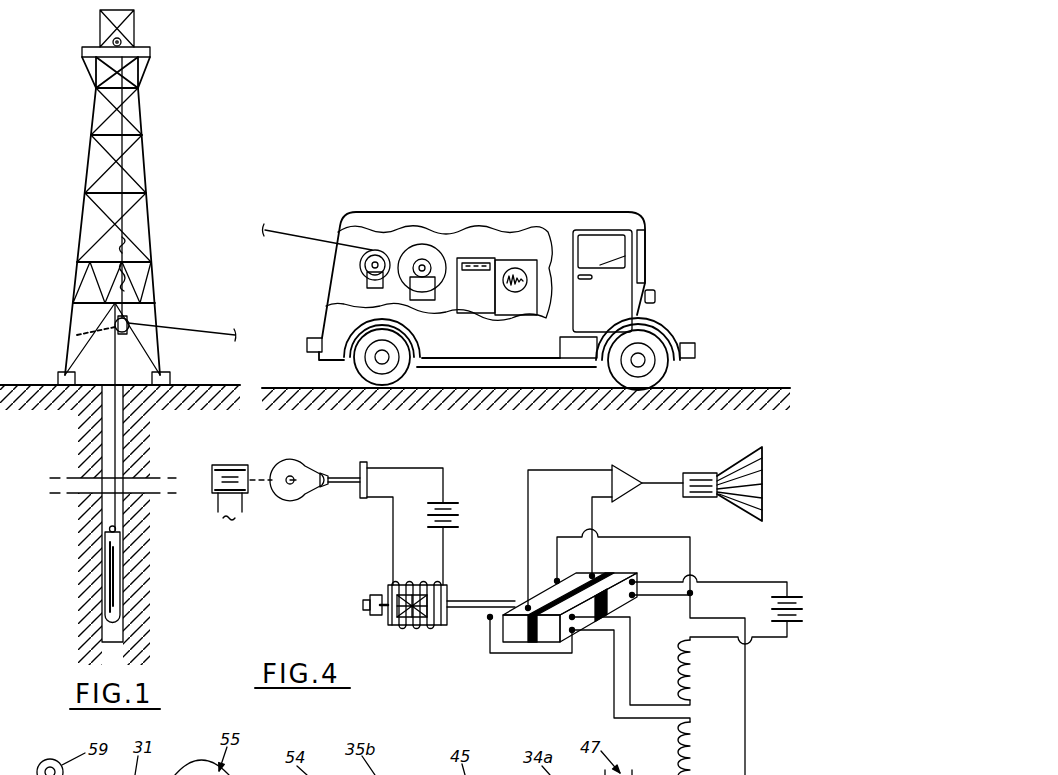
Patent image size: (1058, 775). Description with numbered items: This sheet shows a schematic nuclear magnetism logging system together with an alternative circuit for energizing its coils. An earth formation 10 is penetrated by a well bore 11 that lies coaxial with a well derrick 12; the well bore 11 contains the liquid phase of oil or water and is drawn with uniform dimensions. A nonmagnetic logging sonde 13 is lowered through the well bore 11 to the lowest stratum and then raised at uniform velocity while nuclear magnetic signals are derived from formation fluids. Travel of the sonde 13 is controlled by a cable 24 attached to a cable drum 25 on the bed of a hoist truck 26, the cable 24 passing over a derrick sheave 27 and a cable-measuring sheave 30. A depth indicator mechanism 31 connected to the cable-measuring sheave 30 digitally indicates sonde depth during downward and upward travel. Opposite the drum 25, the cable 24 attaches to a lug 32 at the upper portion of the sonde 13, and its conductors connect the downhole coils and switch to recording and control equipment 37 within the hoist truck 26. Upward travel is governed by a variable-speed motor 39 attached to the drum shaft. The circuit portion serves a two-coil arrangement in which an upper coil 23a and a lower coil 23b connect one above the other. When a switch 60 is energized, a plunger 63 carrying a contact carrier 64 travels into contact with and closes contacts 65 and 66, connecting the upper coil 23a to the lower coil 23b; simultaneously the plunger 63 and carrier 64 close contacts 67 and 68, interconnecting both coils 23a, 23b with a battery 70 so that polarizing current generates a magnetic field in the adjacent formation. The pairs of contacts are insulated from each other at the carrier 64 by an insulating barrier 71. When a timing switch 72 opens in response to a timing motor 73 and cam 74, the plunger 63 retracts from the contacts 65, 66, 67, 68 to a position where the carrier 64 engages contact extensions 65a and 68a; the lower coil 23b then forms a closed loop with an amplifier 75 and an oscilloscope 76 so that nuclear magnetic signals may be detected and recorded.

In FIG. 1, the earth formation 10 is at (73, 623).
In FIG. 1, the well bore 11 is at (100, 455).
In FIG. 1, the well derrick 12 is at (144, 157).
In FIG. 1, the logging sonde 13 is at (108, 580).
In FIG. 1, the cable 24 is at (112, 358).
In FIG. 1, the cable drum 25 is at (425, 248).
In FIG. 1, the hoist truck 26 is at (613, 210).
In FIG. 1, the derrick sheave 27 is at (129, 324).
In FIG. 1, the cable-measuring sheave 30 is at (360, 267).
In FIG. 1, the depth indicator mechanism 31 is at (475, 258).
In FIG. 1, the lug 32 is at (108, 530).
In FIG. 1, the recording and control equipment 37 is at (522, 250).
In FIG. 1, the variable-speed motor 39 is at (419, 262).
In FIG. 4, the switch 60 is at (440, 638).
In FIG. 4, the plunger 63 is at (485, 600).
In FIG. 4, the contact carrier 64 is at (522, 642).
In FIG. 4, the contact 65 is at (573, 632).
In FIG. 4, the contact extension 65a is at (488, 620).
In FIG. 4, the contact 66 is at (570, 619).
In FIG. 4, the contact 67 is at (634, 581).
In FIG. 4, the contact 68 is at (634, 596).
In FIG. 4, the contact extension 68a is at (555, 580).
In FIG. 4, the battery 70 is at (792, 595).
In FIG. 4, the insulating barrier 71 is at (608, 573).
In FIG. 4, the timing switch 72 is at (360, 492).
In FIG. 4, the timing motor 73 is at (232, 465).
In FIG. 4, the cam 74 is at (288, 460).
In FIG. 4, the amplifier 75 is at (632, 472).
In FIG. 4, the oscilloscope 76 is at (767, 480).
In FIG. 4, the upper coil 23a is at (693, 660).
In FIG. 4, the lower coil 23b is at (693, 753).